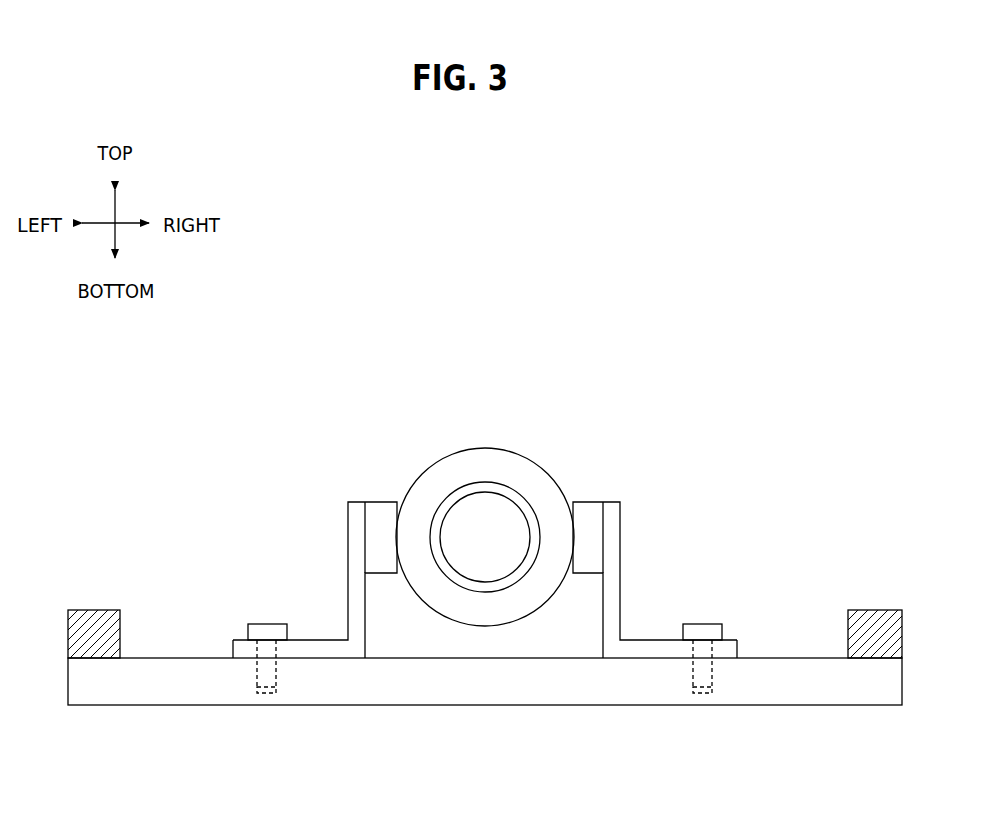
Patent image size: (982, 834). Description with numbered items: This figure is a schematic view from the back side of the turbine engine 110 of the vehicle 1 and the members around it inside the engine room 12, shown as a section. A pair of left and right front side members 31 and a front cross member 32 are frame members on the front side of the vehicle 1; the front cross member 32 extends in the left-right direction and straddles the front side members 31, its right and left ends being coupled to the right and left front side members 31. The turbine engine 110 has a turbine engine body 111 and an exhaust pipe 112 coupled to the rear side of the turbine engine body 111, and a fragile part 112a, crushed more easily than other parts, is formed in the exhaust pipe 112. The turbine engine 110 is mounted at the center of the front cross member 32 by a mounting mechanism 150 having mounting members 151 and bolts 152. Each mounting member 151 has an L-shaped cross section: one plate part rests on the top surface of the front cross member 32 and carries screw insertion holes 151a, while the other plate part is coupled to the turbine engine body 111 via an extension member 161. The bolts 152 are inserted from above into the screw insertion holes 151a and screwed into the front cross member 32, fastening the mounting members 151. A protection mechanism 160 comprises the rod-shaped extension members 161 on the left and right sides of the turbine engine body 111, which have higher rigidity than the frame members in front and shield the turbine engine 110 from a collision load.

The vehicle 1 is at (248, 225).
The engine room 12 is at (263, 424).
The front side member 31 is at (93, 610).
The front cross member 32 is at (803, 705).
The turbine engine 110 is at (491, 469).
The turbine engine body 111 is at (429, 466).
The exhaust pipe 112 is at (482, 482).
The fragile part 112a is at (521, 497).
The mounting mechanism 150 is at (484, 576).
The mounting member 151 is at (484, 612).
The screw insertion hole 151a is at (257, 640).
The bolt 152 is at (263, 624).
The protection mechanism 160 is at (485, 519).
The extension member 161 is at (379, 502).